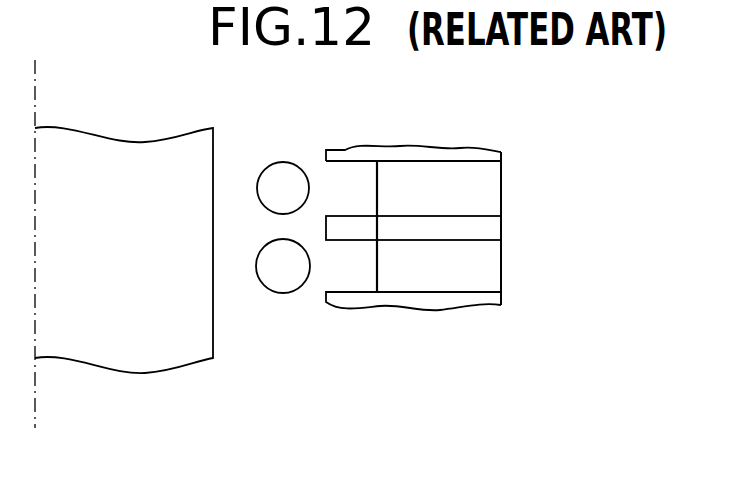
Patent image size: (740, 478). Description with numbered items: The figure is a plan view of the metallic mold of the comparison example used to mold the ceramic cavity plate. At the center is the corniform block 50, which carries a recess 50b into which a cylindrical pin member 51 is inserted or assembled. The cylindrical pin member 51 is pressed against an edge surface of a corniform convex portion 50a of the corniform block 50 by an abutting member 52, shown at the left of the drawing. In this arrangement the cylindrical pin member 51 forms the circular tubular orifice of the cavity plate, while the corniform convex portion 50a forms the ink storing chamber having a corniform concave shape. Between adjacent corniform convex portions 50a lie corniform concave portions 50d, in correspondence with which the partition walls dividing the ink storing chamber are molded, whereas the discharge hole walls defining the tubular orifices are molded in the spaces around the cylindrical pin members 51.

The corniform block 50 is at (464, 237).
The corniform convex portion 50a is at (402, 273).
The recess 50b is at (353, 183).
The corniform concave portion 50d is at (490, 153).
The cylindrical pin member 51 is at (277, 280).
The abutting member 52 is at (165, 347).